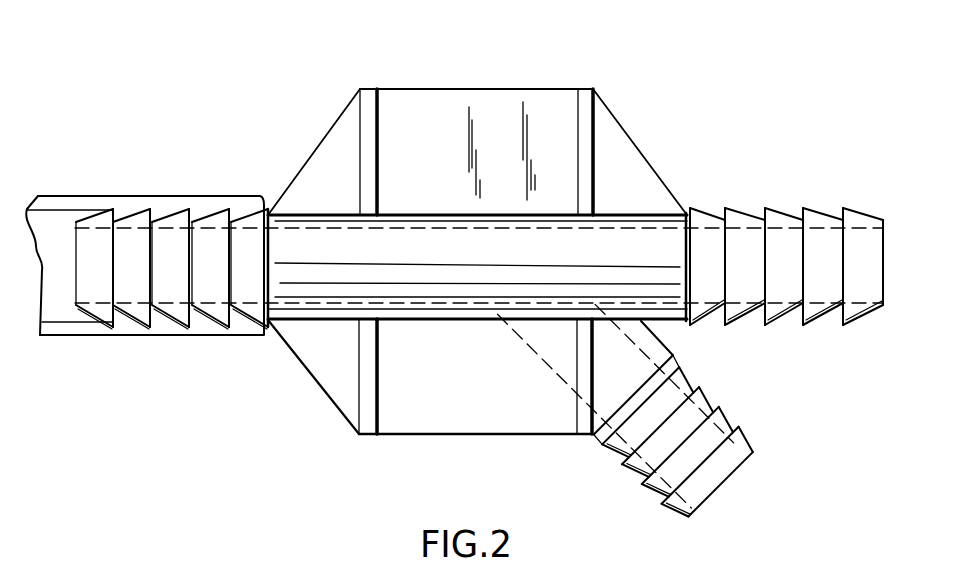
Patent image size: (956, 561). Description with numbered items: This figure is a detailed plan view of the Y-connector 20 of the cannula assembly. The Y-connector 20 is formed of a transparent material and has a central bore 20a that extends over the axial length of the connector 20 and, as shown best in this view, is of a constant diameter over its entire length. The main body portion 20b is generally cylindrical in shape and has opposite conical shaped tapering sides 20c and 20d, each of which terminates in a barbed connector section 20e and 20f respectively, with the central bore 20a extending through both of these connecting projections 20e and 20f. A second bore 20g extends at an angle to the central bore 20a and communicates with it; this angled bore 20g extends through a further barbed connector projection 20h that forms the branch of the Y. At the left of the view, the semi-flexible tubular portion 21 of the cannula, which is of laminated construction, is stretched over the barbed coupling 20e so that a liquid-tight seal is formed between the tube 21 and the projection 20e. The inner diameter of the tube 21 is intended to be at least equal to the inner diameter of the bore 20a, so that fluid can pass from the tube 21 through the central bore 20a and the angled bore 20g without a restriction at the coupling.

The Y-connector 20 is at (497, 38).
The central bore 20a is at (463, 301).
The main body portion 20b is at (518, 88).
The conical shaped tapering side 20c is at (327, 137).
The conical shaped tapering side 20d is at (622, 128).
The barbed connector section 20e is at (120, 218).
The barbed connector section 20f is at (752, 216).
The angled bore 20g is at (558, 362).
The barbed connector projection 20h is at (750, 440).
The semi-flexible tubular portion 21 is at (191, 350).